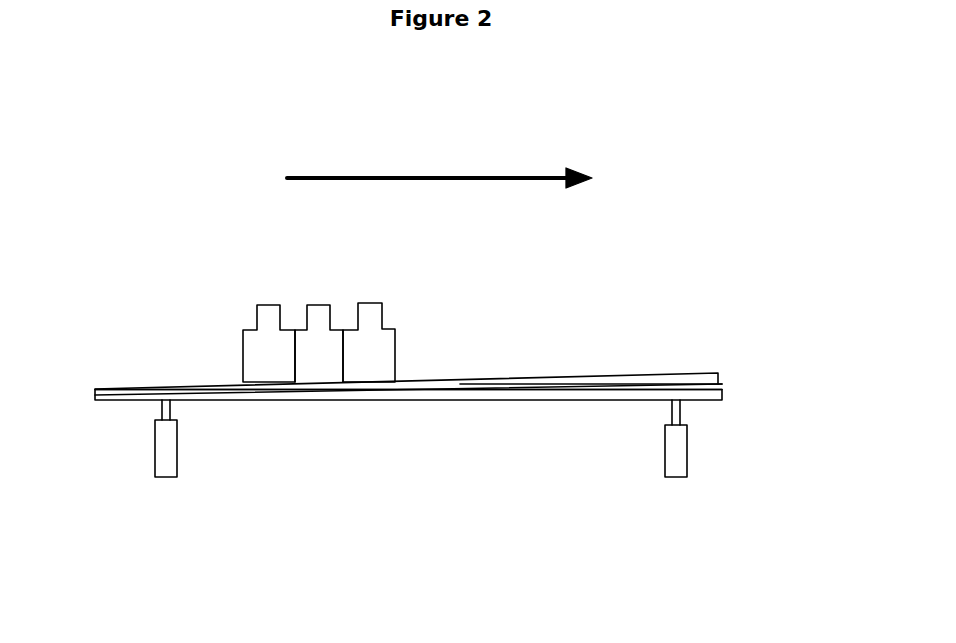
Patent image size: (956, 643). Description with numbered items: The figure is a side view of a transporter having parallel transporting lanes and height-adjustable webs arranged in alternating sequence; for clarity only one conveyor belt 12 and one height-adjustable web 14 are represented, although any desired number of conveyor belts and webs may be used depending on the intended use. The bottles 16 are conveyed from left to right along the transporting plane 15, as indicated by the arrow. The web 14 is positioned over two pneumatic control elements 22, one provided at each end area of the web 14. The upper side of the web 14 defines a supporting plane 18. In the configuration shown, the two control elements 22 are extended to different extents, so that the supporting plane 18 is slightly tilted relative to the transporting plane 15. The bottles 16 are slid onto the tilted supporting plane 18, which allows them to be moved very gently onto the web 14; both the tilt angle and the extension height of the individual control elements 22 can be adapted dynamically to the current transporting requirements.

The transporting device 12 is at (110, 400).
The height-adjustable web 14 is at (718, 373).
The transporting plane 15 is at (688, 386).
The object 16 is at (389, 343).
The supporting plane 18 is at (591, 376).
The pneumatic control elements 22 is at (158, 463).